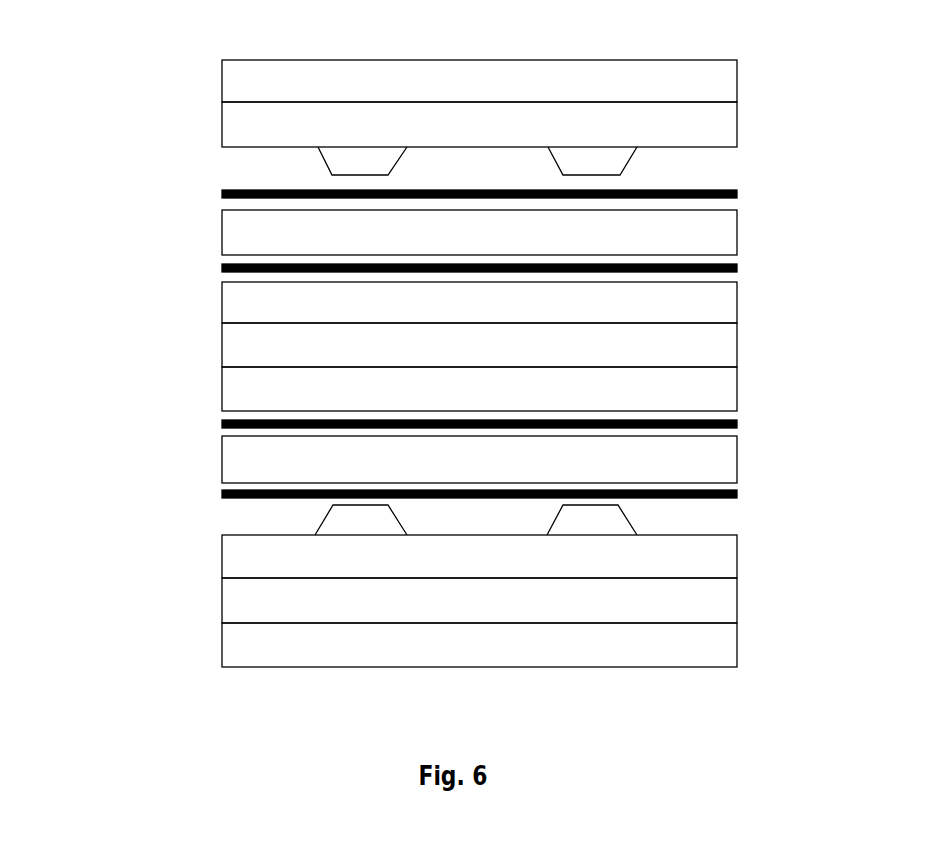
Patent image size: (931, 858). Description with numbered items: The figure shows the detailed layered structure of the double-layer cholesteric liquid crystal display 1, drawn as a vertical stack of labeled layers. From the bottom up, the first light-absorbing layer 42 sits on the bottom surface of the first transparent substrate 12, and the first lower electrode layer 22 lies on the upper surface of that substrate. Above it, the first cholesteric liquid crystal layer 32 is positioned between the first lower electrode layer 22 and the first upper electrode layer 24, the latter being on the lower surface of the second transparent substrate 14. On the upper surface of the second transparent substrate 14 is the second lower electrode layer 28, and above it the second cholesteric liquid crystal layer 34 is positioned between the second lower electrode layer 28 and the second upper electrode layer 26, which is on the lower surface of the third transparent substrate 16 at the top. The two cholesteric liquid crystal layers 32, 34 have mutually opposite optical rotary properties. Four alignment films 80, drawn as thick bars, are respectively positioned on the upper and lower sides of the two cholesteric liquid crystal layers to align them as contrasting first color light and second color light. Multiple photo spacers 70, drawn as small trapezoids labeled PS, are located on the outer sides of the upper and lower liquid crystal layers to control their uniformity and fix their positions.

The double-layer cholesteric liquid crystal display 1 is at (146, 91).
The first transparent substrate 12 is at (720, 605).
The second transparent substrate 14 is at (720, 348).
The third transparent substrate 16 is at (720, 86).
The first lower electrode layer 22 is at (720, 562).
The first upper electrode layer 24 is at (720, 388).
The second upper electrode layer 26 is at (720, 129).
The second lower electrode layer 28 is at (720, 310).
The first cholesteric liquid crystal layer 32 is at (720, 463).
The second cholesteric liquid crystal layer 34 is at (720, 236).
The first light-absorbing layer 42 is at (720, 652).
The photo spacers 70 is at (336, 153).
The alignment films 80 is at (222, 193).